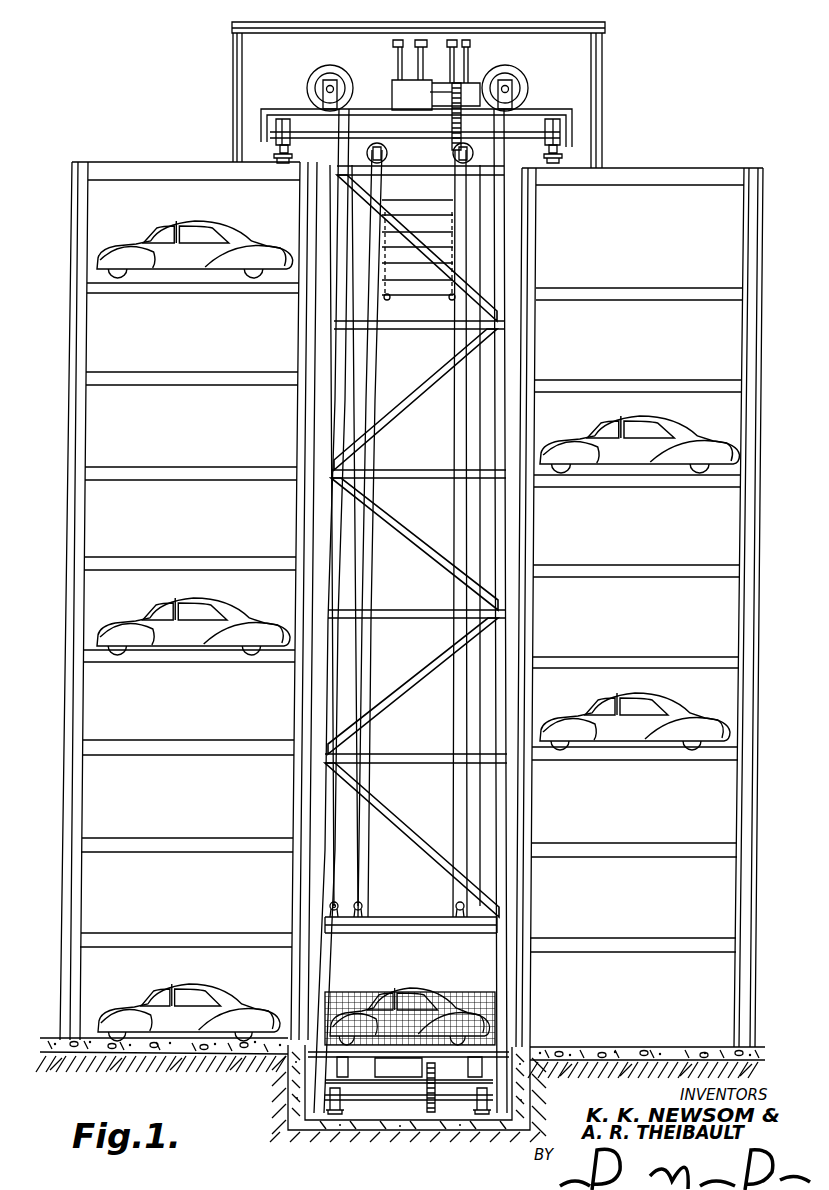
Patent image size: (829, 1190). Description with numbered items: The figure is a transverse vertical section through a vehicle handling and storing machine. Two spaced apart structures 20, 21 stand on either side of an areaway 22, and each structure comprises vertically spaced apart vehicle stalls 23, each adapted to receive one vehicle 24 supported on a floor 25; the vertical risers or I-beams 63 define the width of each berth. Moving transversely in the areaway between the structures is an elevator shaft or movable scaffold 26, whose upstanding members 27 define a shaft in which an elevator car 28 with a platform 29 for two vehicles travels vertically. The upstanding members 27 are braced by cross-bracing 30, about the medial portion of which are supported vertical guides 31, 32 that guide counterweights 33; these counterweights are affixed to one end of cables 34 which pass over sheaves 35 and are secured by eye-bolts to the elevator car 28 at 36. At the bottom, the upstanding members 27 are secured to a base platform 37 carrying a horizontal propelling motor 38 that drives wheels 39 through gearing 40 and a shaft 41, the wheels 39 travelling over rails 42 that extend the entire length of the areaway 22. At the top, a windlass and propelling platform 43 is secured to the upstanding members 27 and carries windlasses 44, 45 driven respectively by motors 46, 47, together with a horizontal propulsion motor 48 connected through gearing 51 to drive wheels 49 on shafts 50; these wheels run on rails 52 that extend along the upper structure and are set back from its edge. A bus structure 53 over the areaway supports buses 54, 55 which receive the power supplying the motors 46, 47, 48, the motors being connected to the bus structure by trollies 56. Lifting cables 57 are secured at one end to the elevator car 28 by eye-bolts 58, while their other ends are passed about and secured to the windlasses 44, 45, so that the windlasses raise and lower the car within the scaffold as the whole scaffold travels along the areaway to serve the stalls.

The spaced apart structure 20 is at (123, 168).
The spaced apart structure 21 is at (670, 176).
The areaway 22 is at (404, 1132).
The vehicle stall 23 is at (100, 202).
The vehicle 24 is at (180, 228).
The floor 25 is at (185, 294).
The elevator shaft or movable scaffold 26 is at (320, 874).
The upstanding members 27 is at (506, 204).
The elevator car 28 is at (412, 934).
The platform 29 is at (498, 1036).
The cross-bracing 30 is at (396, 402).
The vertical guide 31 is at (372, 357).
The vertical guide 32 is at (456, 498).
The counterweight 33 is at (432, 288).
The cable 34 is at (448, 200).
The sheave 35 is at (453, 156).
The eye-bolt attachment 36 is at (358, 934).
The base platform 37 is at (432, 1116).
The horizontal propelling motor 38 is at (334, 1118).
The wheel 39 is at (482, 1118).
The gearing 40 is at (424, 1074).
The shaft 41 is at (373, 1068).
The rail 42 is at (290, 1122).
The windlass and propelling platform 43 is at (295, 108).
The windlass 44 is at (338, 88).
The windlass 45 is at (520, 84).
The motor 46 is at (322, 76).
The motor 47 is at (517, 64).
The horizontal propulsion motor 48 is at (424, 110).
The wheel 49 is at (276, 127).
The shaft 50 is at (300, 138).
The gearing 51 is at (461, 118).
The rail 52 is at (282, 164).
The bus structure 53 is at (232, 48).
The bus 54 is at (398, 74).
The bus 55 is at (421, 45).
The trolley 56 is at (410, 98).
The lifting cable 57 is at (498, 266).
The eye-bolt 58 is at (330, 906).
The vertical riser or I-beam 63 is at (66, 712).